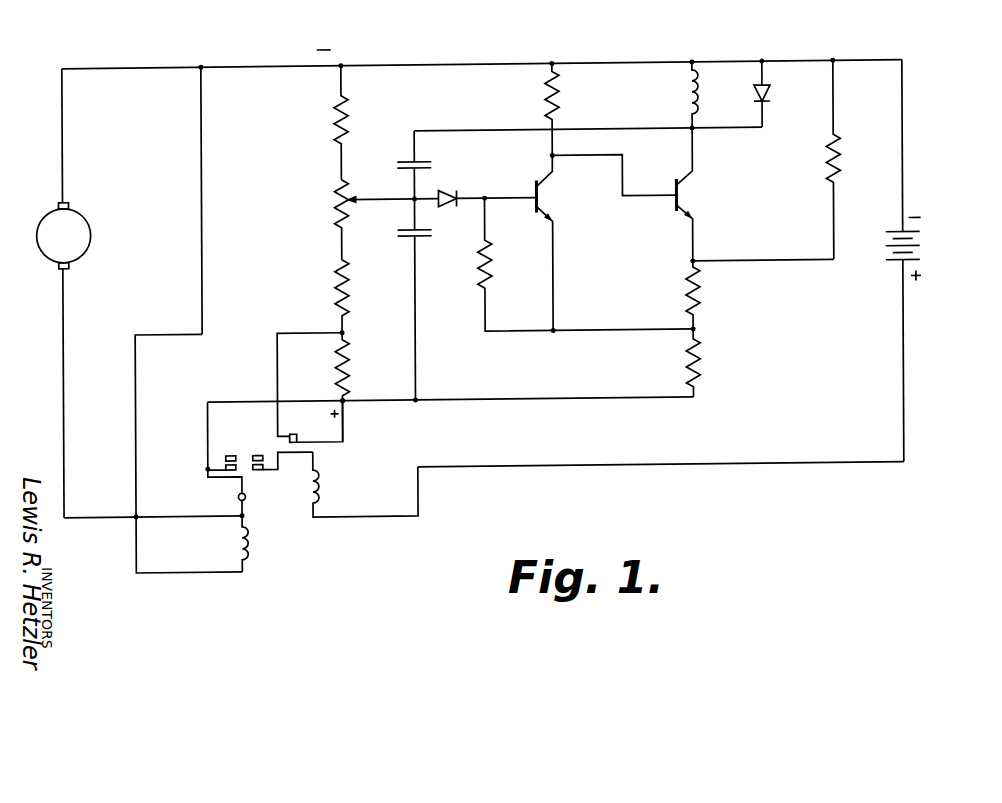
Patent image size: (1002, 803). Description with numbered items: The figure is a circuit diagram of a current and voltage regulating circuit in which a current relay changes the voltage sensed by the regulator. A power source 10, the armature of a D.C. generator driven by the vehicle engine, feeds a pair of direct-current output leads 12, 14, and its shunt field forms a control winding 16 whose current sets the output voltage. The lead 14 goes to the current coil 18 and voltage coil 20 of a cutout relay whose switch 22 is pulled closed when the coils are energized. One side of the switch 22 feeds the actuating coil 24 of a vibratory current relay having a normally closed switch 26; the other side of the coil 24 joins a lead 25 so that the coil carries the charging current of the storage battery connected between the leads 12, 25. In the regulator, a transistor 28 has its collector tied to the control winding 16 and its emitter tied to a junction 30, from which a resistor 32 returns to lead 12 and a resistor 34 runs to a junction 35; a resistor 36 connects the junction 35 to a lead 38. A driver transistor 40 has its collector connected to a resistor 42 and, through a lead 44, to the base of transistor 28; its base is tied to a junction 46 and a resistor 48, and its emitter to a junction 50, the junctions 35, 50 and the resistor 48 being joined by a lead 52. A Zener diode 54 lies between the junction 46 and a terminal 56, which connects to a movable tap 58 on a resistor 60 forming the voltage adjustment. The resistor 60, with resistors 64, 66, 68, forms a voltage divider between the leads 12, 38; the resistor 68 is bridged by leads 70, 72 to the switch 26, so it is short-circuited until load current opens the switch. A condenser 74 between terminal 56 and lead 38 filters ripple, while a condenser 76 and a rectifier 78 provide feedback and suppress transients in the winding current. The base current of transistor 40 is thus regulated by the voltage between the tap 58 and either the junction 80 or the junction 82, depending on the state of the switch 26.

The power source 10 is at (92, 233).
The direct-current output lead 12 is at (119, 64).
The direct-current output lead 14 is at (100, 513).
The control winding 16 is at (690, 74).
The current coil 18 is at (245, 494).
The voltage coil 20 is at (248, 539).
The cutout relay switch 22 is at (243, 453).
The actuating coil 24 is at (319, 478).
The lead 25 is at (655, 466).
The current relay switch 26 is at (293, 434).
The transistor 28 is at (675, 184).
The junction 30 is at (698, 261).
The resistor 32 is at (841, 150).
The resistor 34 is at (700, 300).
The junction 35 is at (701, 331).
The resistor 36 is at (700, 370).
The lead 38 is at (233, 399).
The driver transistor 40 is at (536, 180).
The resistor 42 is at (558, 100).
The lead 44 is at (596, 156).
The junction 46 is at (485, 198).
The resistor 48 is at (490, 275).
The junction 50 is at (555, 331).
The lead 52 is at (625, 331).
The Zener diode 54 is at (432, 234).
The terminal 56 is at (415, 198).
The movable tap 58 is at (346, 186).
The resistor 60 is at (340, 198).
The resistor 64 is at (338, 119).
The resistor 66 is at (340, 272).
The resistor 68 is at (340, 372).
The lead 70 is at (344, 423).
The lead 72 is at (285, 331).
The condenser 74 is at (398, 234).
The condenser 76 is at (408, 160).
The rectifier 78 is at (771, 97).
The junction 80 is at (345, 331).
The junction 82 is at (345, 399).